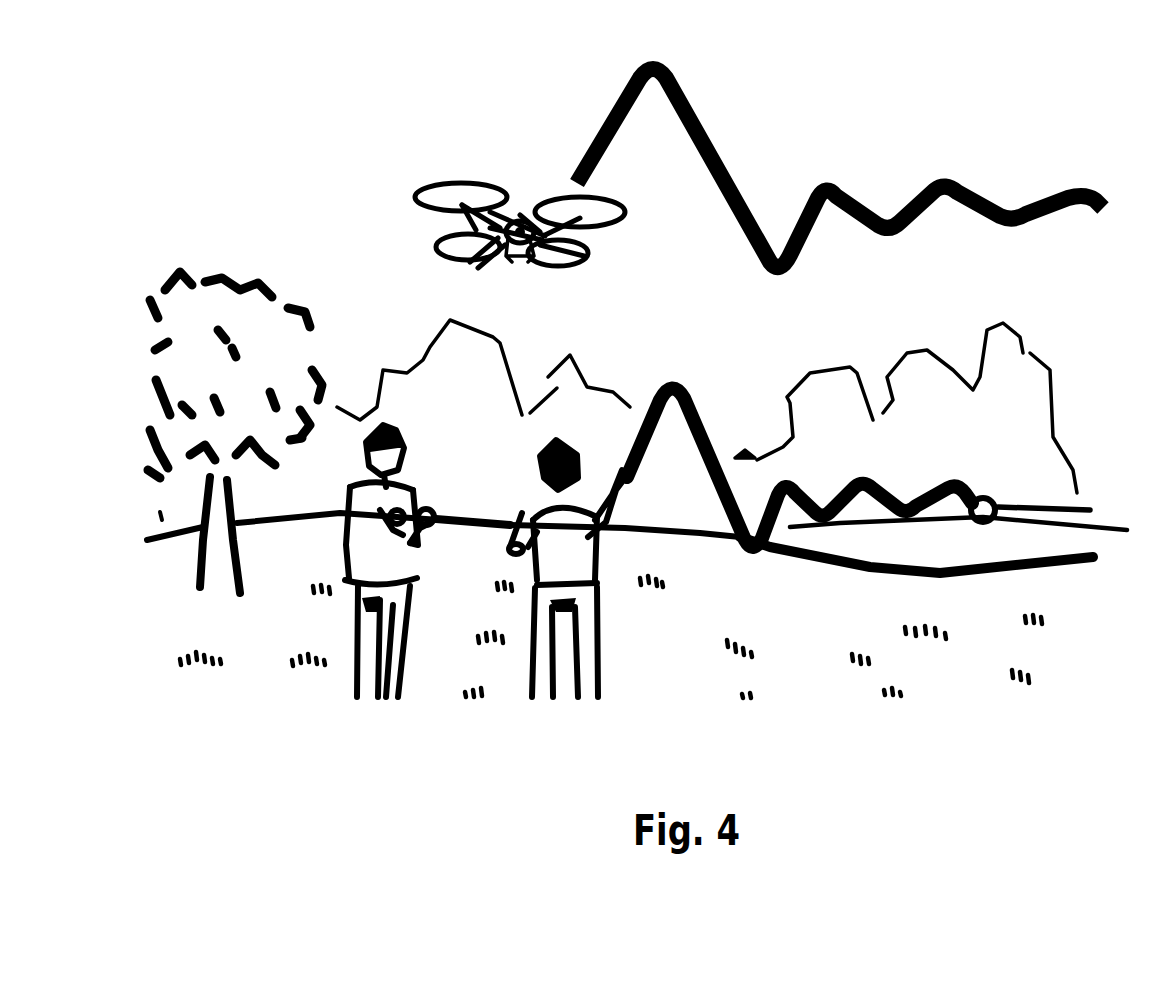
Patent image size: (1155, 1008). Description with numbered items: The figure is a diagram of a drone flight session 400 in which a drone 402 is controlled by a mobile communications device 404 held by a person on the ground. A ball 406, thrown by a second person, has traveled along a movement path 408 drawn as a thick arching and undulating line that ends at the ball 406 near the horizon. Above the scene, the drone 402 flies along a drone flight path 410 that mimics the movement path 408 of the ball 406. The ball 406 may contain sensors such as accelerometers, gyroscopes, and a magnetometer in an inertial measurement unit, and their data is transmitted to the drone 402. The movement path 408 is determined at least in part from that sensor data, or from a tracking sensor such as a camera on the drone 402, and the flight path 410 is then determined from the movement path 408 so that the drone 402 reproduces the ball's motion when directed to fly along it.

The drone flight session 400 is at (972, 110).
The drone 402 is at (517, 263).
The mobile communications device 404 is at (440, 510).
The ball 406 is at (990, 483).
The movement path 408 is at (693, 398).
The drone flight path 410 is at (727, 150).